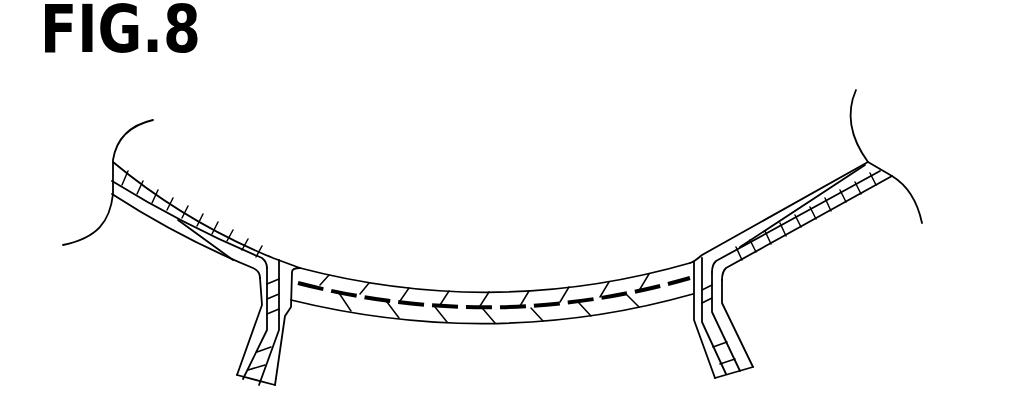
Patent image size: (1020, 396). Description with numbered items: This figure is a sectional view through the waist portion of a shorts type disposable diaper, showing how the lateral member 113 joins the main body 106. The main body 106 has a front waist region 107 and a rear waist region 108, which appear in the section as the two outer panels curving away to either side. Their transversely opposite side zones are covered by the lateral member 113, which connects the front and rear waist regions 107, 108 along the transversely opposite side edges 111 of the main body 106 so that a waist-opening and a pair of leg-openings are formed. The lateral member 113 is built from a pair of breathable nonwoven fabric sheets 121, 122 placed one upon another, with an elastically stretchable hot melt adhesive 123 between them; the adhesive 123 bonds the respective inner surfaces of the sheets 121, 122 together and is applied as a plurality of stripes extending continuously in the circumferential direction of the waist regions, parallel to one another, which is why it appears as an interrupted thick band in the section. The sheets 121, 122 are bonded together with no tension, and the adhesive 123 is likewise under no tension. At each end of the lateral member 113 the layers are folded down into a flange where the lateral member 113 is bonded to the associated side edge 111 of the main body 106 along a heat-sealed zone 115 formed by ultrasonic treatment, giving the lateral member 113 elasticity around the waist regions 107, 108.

The main body 106 is at (256, 223).
The front waist region 107 is at (170, 200).
The rear waist region 108 is at (810, 195).
The side edge 111 is at (727, 308).
The lateral member 113 is at (492, 281).
The heat-sealed zone 115 is at (289, 324).
The breathable nonwoven fabric sheet 121 is at (521, 289).
The breathable nonwoven fabric sheet 122 is at (582, 320).
The elastically stretchable hot melt adhesive 123 is at (512, 322).